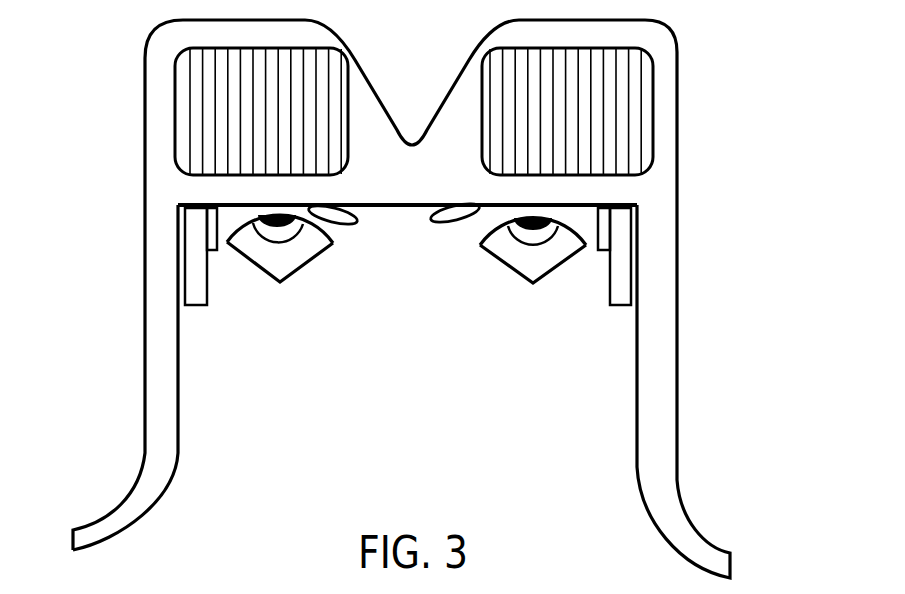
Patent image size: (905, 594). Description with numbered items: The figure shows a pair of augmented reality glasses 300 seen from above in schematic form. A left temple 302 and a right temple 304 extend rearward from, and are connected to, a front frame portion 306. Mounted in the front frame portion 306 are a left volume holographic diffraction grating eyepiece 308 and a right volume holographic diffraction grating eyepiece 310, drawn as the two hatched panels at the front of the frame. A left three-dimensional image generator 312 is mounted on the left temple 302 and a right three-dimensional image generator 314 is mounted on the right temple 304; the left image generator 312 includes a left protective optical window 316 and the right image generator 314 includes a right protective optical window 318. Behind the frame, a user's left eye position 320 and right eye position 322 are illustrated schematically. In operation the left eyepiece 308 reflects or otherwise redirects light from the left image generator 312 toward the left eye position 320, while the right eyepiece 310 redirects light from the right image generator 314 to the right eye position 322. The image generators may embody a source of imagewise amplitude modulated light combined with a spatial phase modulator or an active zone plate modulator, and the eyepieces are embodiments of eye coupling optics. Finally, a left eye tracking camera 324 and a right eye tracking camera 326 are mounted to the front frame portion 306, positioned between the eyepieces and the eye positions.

The augmented reality glasses 300 is at (433, 474).
The left temple 302 is at (143, 393).
The right temple 304 is at (660, 402).
The front frame portion 306 is at (397, 187).
The left volume holographic diffraction grating eyepiece 308 is at (177, 113).
The right volume holographic diffraction grating eyepiece 310 is at (647, 118).
The left 3D image generator 312 is at (190, 292).
The right 3D image generator 314 is at (607, 288).
The left protective optical window 316 is at (215, 245).
The right protective optical window 318 is at (613, 222).
The left eye position 320 is at (278, 267).
The right eye position 322 is at (533, 272).
The left eye tracking camera 324 is at (348, 222).
The right eye tracking camera 326 is at (428, 208).